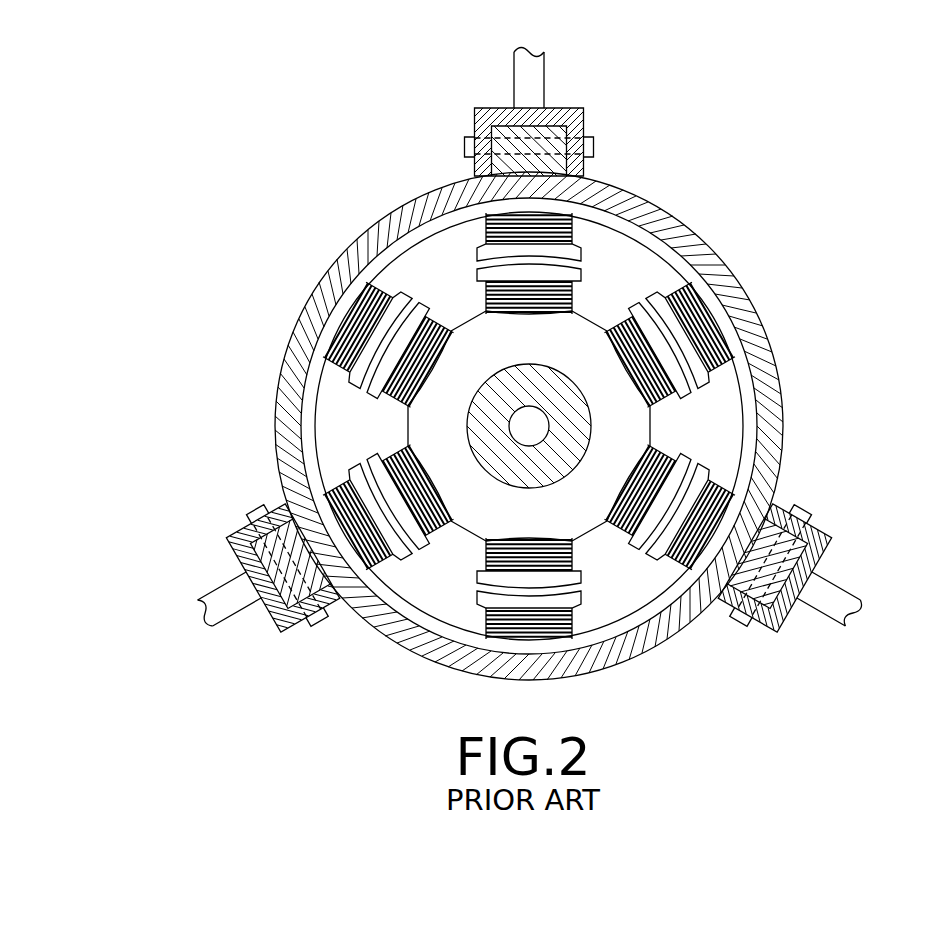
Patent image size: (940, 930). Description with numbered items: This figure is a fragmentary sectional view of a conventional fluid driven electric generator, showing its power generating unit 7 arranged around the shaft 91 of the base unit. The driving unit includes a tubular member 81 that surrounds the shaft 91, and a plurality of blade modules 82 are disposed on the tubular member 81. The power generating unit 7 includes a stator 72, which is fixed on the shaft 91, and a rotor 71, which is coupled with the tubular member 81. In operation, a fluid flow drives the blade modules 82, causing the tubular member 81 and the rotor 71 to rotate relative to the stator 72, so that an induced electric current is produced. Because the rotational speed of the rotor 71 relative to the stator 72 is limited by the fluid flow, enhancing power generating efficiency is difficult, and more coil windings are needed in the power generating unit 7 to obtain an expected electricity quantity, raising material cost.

The power generating unit 7 is at (559, 419).
The rotor 71 is at (668, 313).
The stator 72 is at (628, 428).
The tubular member 81 is at (378, 233).
The blade modules 82 is at (537, 80).
The shaft 91 is at (508, 477).